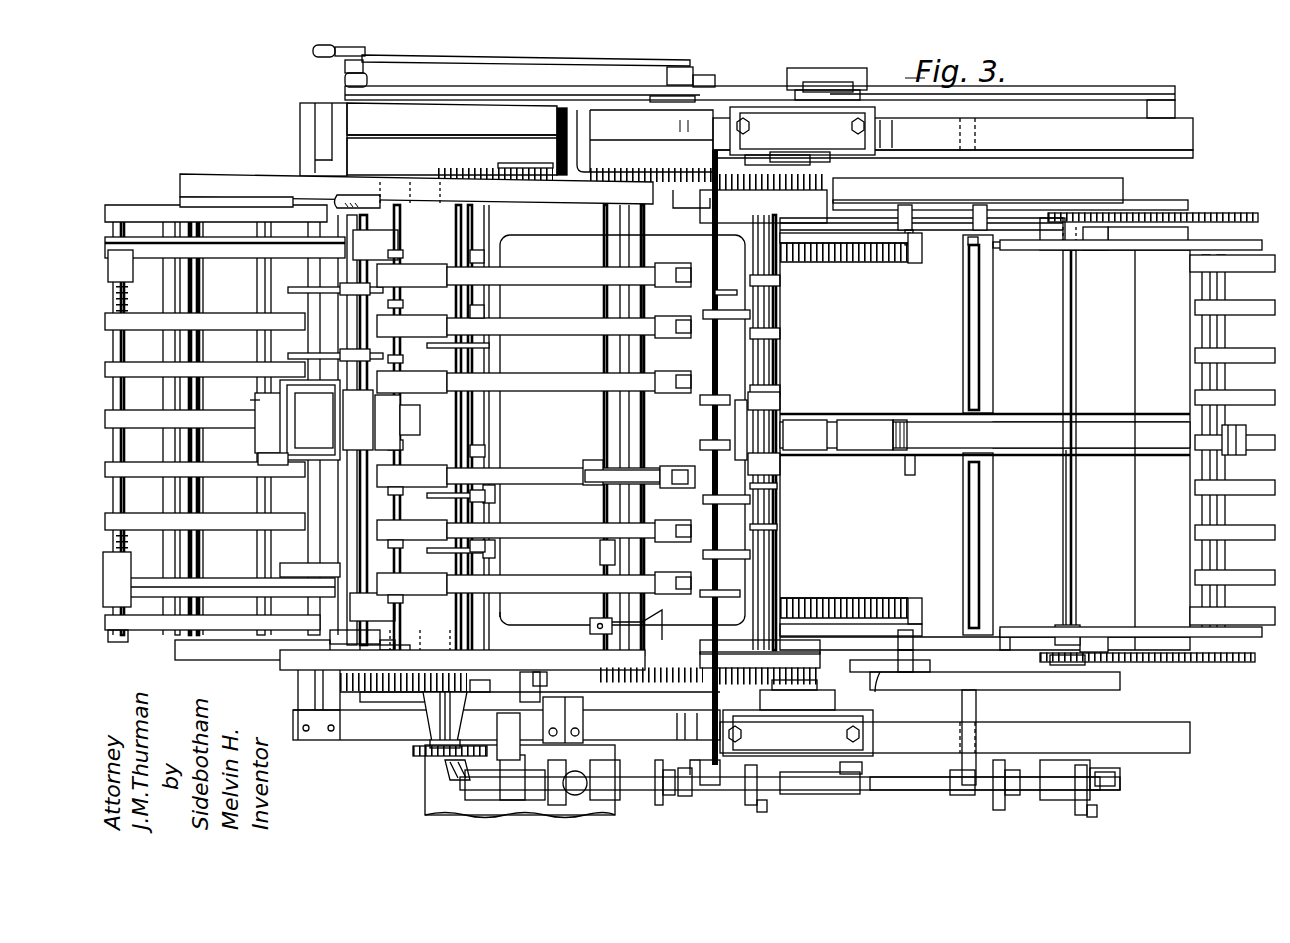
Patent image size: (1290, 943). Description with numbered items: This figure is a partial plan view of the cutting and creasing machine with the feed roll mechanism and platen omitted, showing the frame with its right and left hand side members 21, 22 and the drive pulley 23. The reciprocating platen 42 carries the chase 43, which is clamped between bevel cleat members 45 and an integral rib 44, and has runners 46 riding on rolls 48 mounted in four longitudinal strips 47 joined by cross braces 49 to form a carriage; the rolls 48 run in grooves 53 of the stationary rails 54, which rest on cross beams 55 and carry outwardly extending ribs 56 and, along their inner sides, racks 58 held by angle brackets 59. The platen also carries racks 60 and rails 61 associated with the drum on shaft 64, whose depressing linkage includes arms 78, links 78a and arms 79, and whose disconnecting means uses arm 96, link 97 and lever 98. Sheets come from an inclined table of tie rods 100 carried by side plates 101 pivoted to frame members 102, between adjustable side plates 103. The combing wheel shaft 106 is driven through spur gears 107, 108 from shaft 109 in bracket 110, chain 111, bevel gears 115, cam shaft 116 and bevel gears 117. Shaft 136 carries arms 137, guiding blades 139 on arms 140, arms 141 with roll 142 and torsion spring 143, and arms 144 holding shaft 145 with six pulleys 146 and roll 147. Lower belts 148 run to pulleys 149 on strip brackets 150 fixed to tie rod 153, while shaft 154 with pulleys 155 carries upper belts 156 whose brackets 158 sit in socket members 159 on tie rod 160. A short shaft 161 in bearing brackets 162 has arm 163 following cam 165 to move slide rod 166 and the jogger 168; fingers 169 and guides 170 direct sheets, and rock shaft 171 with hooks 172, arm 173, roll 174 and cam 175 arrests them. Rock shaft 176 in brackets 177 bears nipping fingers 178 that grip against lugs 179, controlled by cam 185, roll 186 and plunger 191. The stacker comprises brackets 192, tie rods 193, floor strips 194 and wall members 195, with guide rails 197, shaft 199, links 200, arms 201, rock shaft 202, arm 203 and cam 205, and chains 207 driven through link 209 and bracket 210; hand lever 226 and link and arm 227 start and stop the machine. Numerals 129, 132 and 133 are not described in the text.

The right hand side member 21 is at (1178, 749).
The left hand side member 22 is at (506, 139).
The pulley 23 is at (425, 800).
The platen 42 is at (768, 558).
The chase 43 is at (500, 420).
The integral rib 44 is at (770, 509).
The bevel cleat members 45 is at (501, 262).
The runners 46 is at (810, 620).
The longitudinal strips 47 is at (937, 245).
The rolls 48 is at (960, 208).
The cross braces 49 is at (978, 334).
The grooves 53 is at (949, 262).
The rails 54 is at (1118, 191).
The cross beams 55 is at (1138, 530).
The ribs 56 is at (1012, 186).
The racks 58 is at (864, 266).
The angle brackets 59 is at (903, 268).
The racks 60 is at (696, 193).
The rails 61 is at (763, 426).
The drum shaft 64 is at (818, 692).
The arm 78 is at (834, 73).
The link 78a is at (871, 93).
The arm 79 is at (755, 89).
The arm 96 is at (697, 73).
The link 97 is at (435, 62).
The manually-operable lever 98 is at (314, 51).
The tie rods 100 is at (162, 349).
The side plates 101 is at (190, 190).
The frame members 102 is at (250, 180).
The side plates 103 is at (150, 211).
The shaft 106 is at (372, 652).
The spur gear 107 is at (395, 688).
The spur gear 108 is at (466, 689).
The shaft 109 is at (425, 710).
The bracket 110 is at (430, 740).
The chain 111 is at (415, 756).
The bevel gears 115 is at (450, 773).
The cam-carrying shaft 116 is at (930, 793).
The bevel gears 117 is at (590, 793).
The cross bar 129 is at (306, 308).
The bracket 132 is at (260, 453).
The bracket 133 is at (272, 389).
The shaft 136 is at (340, 571).
The arms 137 is at (347, 204).
The guiding blades 139 is at (333, 338).
The arms 140 is at (358, 286).
The arms 141 is at (356, 392).
The roll 142 is at (311, 420).
The torsion spring 143 is at (328, 433).
The arms 144 is at (374, 425).
The shaft 145 is at (393, 552).
The pulleys 146 is at (410, 480).
The roll 147 is at (404, 427).
The belts 148 is at (420, 320).
The pulleys 149 is at (690, 548).
The strip brackets 150 is at (686, 345).
The tie rod 153 is at (648, 434).
The shaft 154 is at (488, 614).
The pulleys 155 is at (495, 463).
The belts 156 is at (570, 273).
The brackets 158 is at (660, 345).
The socket members 159 is at (598, 497).
The tie rod 160 is at (588, 463).
The short shaft 161 is at (588, 707).
The bearing brackets 162 is at (522, 678).
The arm 163 is at (535, 705).
The cam 165 is at (526, 800).
The slide rod 166 is at (602, 553).
The flat member 168 is at (667, 638).
The fingers 169 is at (730, 428).
The guides 170 is at (435, 352).
The rock shaft 171 is at (702, 603).
The hook-shaped members 172 is at (740, 538).
The arm 173 is at (696, 795).
The roll 174 is at (672, 766).
The cam 175 is at (683, 796).
The rock shaft 176 is at (778, 523).
The bearing brackets 177 is at (786, 400).
The nipping fingers 178 is at (780, 340).
The lugs 179 is at (778, 493).
The cam 185 is at (763, 798).
The roll 186 is at (766, 811).
The plunger 191 is at (1118, 769).
The brackets 192 is at (1248, 273).
The tie rods 193 is at (1228, 334).
The strips 194 is at (1248, 393).
The upright wall members 195 is at (1245, 426).
The guide rails 197 is at (1250, 245).
The shaft 199 is at (1061, 556).
The links 200 is at (1082, 627).
The arms 201 is at (1028, 252).
The rock shaft 202 is at (986, 509).
The arm 203 is at (975, 793).
The cam 205 is at (1000, 804).
The chains 207 is at (1217, 222).
The link 209 is at (890, 684).
The bracket 210 is at (855, 636).
The hand lever 226 is at (344, 79).
The link and arm 227 is at (585, 90).